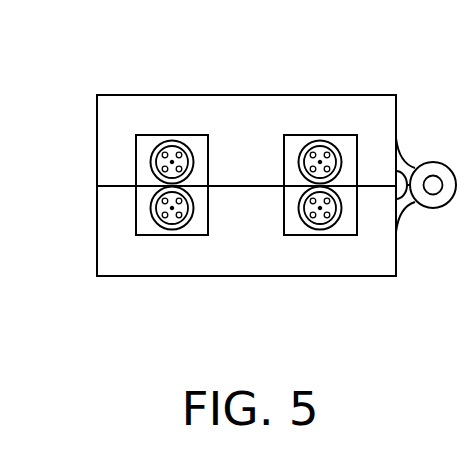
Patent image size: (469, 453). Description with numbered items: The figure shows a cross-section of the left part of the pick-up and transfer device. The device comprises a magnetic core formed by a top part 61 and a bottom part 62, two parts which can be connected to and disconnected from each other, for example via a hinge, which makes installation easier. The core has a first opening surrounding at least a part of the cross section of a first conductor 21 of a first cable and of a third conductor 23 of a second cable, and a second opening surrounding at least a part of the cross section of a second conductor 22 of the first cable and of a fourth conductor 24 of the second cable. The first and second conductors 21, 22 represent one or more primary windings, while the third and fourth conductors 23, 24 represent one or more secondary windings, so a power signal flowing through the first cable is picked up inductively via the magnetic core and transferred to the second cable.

The first conductor 21 is at (172, 161).
The second conductor 22 is at (320, 161).
The third conductor 23 is at (172, 209).
The fourth conductor 24 is at (320, 209).
The top part 61 is at (113, 127).
The bottom part 62 is at (113, 243).